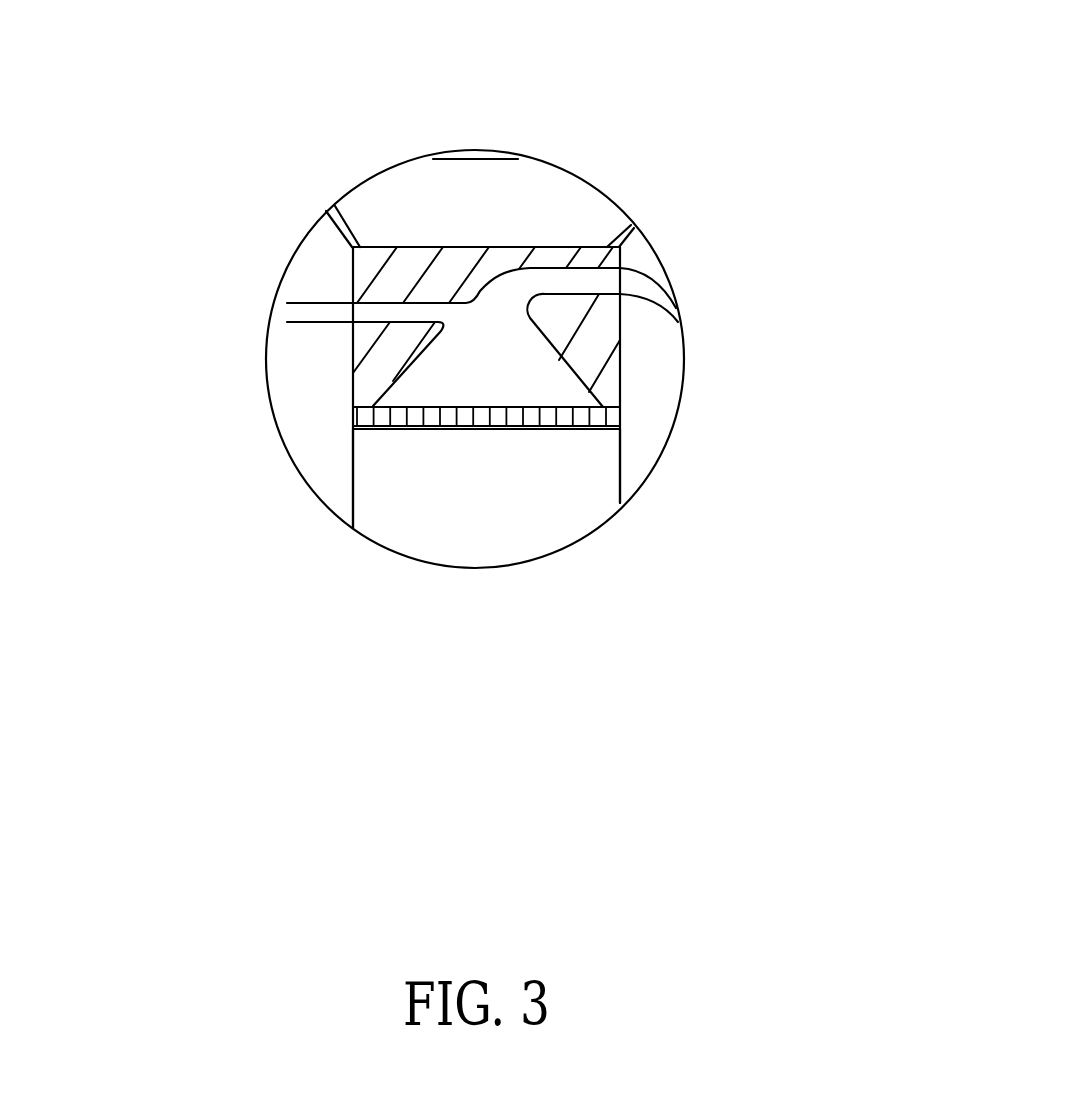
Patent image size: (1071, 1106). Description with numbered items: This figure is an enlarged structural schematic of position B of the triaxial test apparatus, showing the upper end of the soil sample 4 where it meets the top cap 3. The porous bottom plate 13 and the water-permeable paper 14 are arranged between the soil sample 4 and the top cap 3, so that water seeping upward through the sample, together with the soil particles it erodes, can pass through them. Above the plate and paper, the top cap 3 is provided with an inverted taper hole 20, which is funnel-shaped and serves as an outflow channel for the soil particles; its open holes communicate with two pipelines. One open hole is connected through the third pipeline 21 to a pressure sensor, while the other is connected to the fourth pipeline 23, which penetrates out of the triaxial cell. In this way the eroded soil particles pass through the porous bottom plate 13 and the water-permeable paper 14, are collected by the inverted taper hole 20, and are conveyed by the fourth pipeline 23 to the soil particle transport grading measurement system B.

The top cap 3 is at (373, 270).
The soil sample 4 is at (508, 500).
The porous bottom plate 13 is at (527, 417).
The water-permeable paper 14 is at (573, 427).
The inverted taper hole 20 is at (467, 353).
The third pipeline 21 is at (312, 313).
The fourth pipeline 23 is at (640, 283).
The soil particle transport grading measurement system B is at (290, 463).